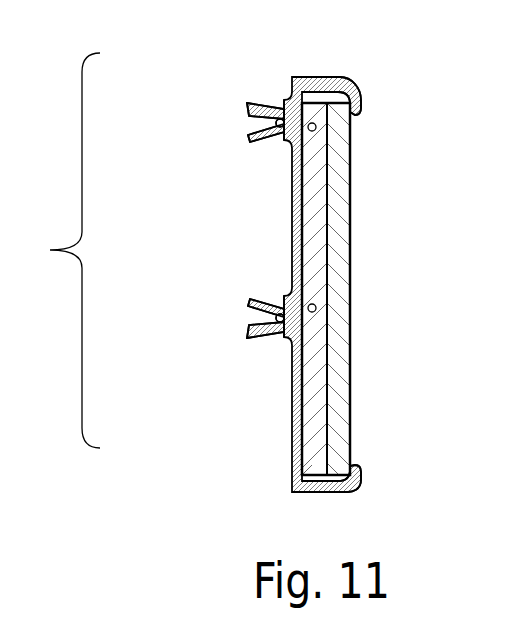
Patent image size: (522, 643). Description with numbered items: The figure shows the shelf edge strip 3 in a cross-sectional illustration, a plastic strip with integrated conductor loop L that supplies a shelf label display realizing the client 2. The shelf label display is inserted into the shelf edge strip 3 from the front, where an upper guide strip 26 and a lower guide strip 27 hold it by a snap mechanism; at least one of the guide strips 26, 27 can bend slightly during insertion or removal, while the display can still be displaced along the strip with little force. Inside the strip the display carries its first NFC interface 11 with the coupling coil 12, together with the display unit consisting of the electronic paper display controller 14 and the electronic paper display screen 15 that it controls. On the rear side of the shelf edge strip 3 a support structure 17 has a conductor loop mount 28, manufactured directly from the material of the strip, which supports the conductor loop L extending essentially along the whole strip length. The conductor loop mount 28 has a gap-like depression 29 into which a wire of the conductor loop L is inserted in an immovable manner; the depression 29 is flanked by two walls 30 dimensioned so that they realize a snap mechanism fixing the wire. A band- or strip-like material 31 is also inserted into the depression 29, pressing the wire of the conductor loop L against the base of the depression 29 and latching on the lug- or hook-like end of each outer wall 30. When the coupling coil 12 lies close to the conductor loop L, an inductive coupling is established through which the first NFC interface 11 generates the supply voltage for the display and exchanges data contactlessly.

The client 2 is at (353, 258).
The shelf edge strip 3 is at (359, 70).
The first NFC interface 11 is at (320, 170).
The coupling coil 12 is at (316, 127).
The electronic paper display controller 14 is at (320, 400).
The electronic paper display screen 15 is at (335, 352).
The support structure 17 is at (56, 250).
The upper guide strip 26 is at (352, 82).
The lower guide strip 27 is at (340, 494).
The conductor loop mount 28 is at (240, 90).
The gap-like depression 29 is at (232, 129).
The walls 30 is at (249, 104).
The band- or strip-like material 31 is at (252, 122).
The conductor loop L is at (248, 137).